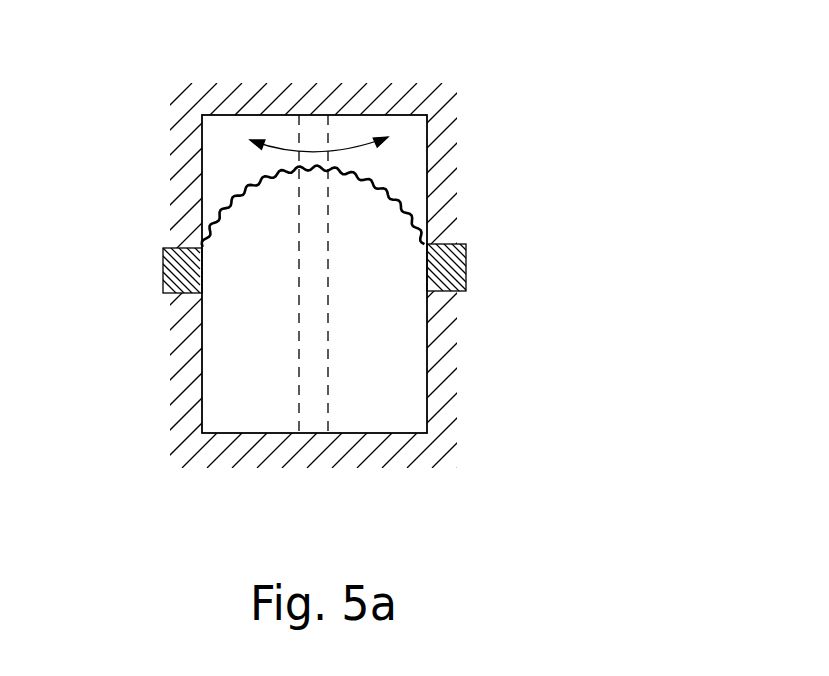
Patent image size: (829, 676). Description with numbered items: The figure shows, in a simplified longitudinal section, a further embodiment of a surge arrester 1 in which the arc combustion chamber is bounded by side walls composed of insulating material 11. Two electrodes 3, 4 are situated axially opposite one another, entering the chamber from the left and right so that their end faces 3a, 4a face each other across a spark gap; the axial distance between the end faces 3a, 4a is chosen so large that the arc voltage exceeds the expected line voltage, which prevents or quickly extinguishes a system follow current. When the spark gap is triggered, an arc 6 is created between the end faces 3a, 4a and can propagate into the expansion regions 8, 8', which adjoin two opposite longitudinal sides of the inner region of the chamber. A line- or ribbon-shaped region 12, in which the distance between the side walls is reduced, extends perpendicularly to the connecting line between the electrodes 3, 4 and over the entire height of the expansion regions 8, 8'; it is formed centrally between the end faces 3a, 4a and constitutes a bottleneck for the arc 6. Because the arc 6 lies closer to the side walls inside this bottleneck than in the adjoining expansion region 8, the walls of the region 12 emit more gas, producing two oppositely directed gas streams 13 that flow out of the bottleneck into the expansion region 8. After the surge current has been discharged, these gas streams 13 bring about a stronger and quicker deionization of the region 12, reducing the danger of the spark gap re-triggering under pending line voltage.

The surge arrester 1 is at (188, 487).
The electrode 3 is at (466, 268).
The end face of electrode 3a is at (427, 292).
The electrode 4 is at (163, 273).
The end face of electrode 4a is at (202, 283).
The arc 6 is at (400, 210).
The expansion region 8 is at (243, 242).
The expansion region 8' is at (349, 339).
The insulating material 11 is at (443, 405).
The region 12 is at (316, 252).
The gas streams 13 is at (290, 150).